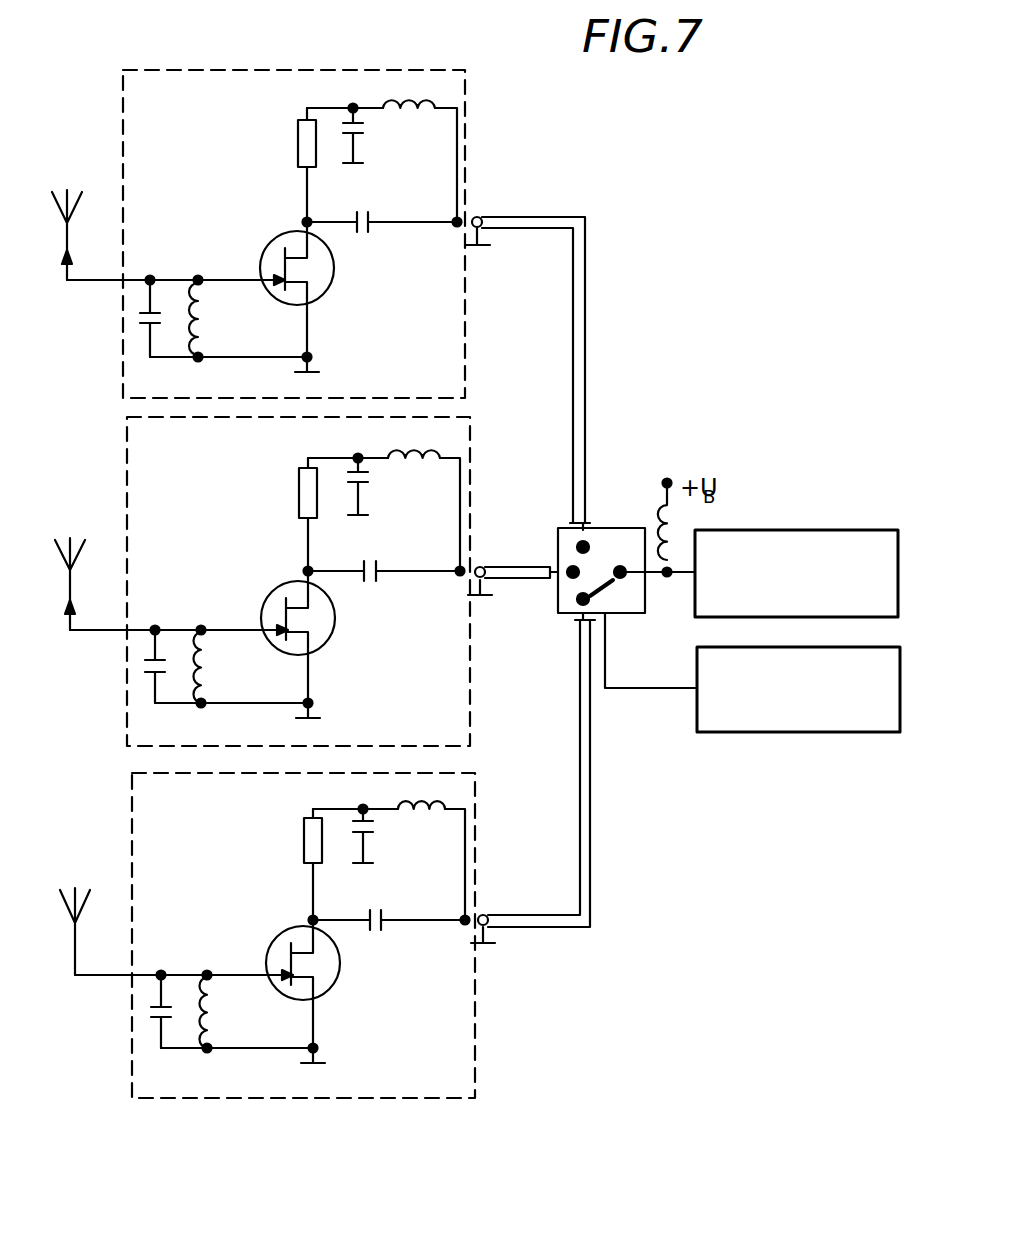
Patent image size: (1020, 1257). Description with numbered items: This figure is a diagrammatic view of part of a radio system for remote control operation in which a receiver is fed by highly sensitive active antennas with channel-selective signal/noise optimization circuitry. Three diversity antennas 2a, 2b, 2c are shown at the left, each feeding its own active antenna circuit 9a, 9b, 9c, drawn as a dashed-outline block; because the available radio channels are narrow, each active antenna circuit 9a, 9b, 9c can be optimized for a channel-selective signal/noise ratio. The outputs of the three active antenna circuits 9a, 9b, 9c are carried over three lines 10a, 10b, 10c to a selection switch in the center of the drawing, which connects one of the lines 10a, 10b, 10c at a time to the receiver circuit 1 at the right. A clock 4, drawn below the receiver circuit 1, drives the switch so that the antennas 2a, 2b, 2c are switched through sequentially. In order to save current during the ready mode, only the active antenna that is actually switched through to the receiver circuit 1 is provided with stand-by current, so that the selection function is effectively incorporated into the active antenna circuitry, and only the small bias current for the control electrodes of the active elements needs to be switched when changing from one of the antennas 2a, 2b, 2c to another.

The receiver circuit 1 is at (871, 592).
The clock 4 is at (752, 672).
The diversity antenna 2a is at (79, 235).
The diversity antenna 2b is at (82, 584).
The diversity antenna 2c is at (86, 931).
The amplifier stage 9a is at (432, 384).
The amplifier stage 9b is at (428, 734).
The amplifier stage 9c is at (423, 1089).
The coaxial cable 10a is at (583, 395).
The coaxial cable 10b is at (528, 567).
The coaxial cable 10c is at (588, 882).